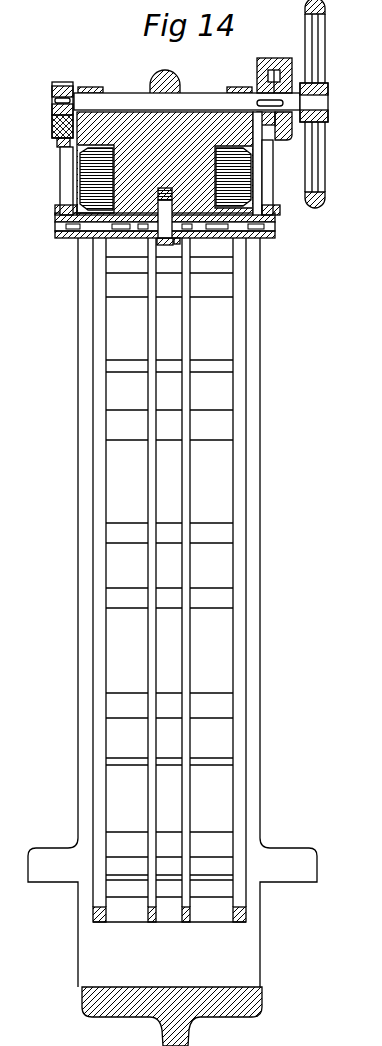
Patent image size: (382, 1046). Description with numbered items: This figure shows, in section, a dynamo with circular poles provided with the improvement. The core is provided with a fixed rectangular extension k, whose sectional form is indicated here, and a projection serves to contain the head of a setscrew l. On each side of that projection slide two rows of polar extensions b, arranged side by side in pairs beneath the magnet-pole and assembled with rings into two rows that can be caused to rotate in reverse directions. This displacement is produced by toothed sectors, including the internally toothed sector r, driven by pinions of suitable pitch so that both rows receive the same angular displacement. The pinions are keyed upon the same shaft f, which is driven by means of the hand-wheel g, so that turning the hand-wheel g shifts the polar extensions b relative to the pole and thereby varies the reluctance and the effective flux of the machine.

The shaft f is at (103, 100).
The semipolar extensions b is at (50, 115).
The hand-wheel g is at (325, 42).
The toothed sector r is at (62, 186).
The fixed rectangular extensions k is at (150, 238).
The setscrew l is at (178, 238).